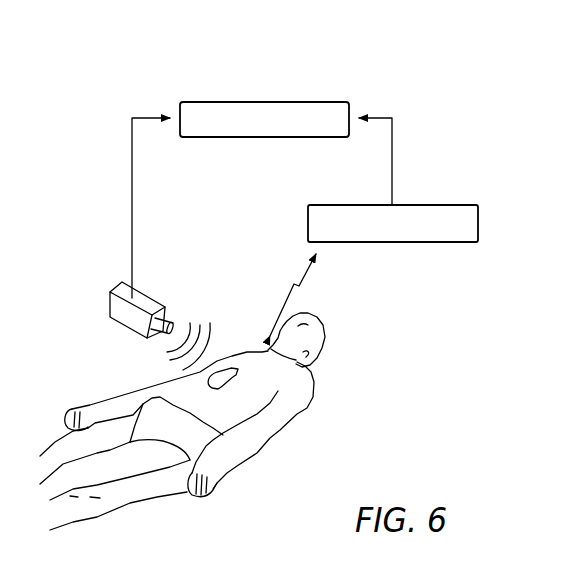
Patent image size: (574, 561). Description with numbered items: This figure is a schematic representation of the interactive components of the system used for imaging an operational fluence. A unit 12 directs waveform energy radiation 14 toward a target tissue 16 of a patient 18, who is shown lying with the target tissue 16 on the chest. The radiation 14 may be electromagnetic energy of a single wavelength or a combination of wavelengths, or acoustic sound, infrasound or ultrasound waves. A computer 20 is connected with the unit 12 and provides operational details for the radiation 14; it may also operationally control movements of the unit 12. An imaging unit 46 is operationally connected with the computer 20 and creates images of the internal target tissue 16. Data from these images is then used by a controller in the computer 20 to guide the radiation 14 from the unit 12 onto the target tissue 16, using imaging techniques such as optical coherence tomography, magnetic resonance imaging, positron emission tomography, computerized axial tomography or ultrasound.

The unit 12 is at (110, 291).
The radiation 14 is at (214, 338).
The target tissue 16 is at (243, 351).
The patient 18 is at (150, 475).
The computer 20 is at (180, 102).
The imaging unit 46 is at (478, 222).